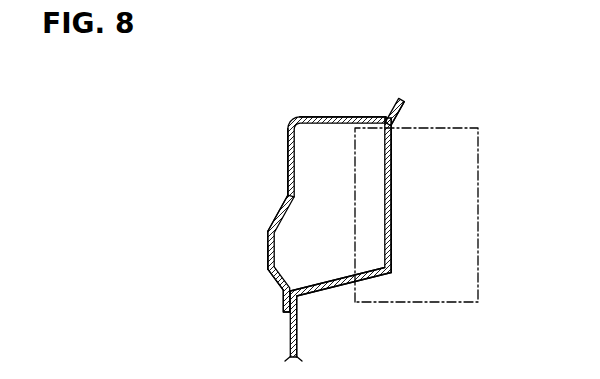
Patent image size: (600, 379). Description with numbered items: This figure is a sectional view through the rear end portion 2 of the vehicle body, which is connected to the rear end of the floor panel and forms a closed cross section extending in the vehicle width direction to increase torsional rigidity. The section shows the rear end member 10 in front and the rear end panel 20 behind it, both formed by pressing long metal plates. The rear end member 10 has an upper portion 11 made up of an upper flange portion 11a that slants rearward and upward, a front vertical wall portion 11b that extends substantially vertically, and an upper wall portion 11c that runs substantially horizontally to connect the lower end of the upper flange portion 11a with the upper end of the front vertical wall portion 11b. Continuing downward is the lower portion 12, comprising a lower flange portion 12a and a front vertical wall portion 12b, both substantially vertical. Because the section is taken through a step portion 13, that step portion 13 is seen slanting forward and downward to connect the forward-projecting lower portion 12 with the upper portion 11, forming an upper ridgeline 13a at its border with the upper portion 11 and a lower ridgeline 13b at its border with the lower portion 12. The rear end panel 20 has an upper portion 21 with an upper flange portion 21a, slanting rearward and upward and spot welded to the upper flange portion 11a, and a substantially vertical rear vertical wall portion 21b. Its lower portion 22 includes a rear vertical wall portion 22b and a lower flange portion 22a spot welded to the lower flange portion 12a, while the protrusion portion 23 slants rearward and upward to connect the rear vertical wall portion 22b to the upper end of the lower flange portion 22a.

The rear end portion 2 is at (437, 78).
The rear end member 10 is at (279, 136).
The upper portion 11 is at (303, 117).
The upper flange portion 11a is at (390, 106).
The front vertical wall portion 11b is at (287, 170).
The upper wall portion 11c is at (334, 117).
The lower portion 12 is at (268, 272).
The lower flange portion 12a is at (283, 306).
The front vertical wall portion 12b is at (267, 256).
The step portion 13 is at (280, 212).
The upper ridgeline 13a is at (287, 197).
The lower ridgeline 13b is at (268, 228).
The rear end panel 20 is at (413, 247).
The upper portion 21 is at (392, 182).
The upper flange portion 21a is at (401, 113).
The rear vertical wall portion 21b is at (392, 160).
The lower portion 22 is at (393, 268).
The lower flange portion 22a is at (298, 306).
The rear vertical wall portion 22b is at (392, 212).
The protrusion portion 23 is at (365, 278).